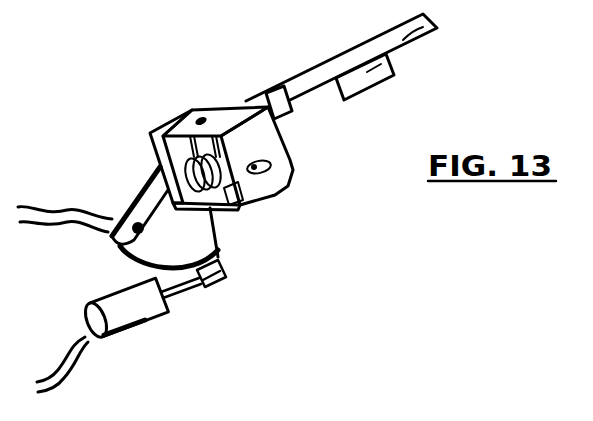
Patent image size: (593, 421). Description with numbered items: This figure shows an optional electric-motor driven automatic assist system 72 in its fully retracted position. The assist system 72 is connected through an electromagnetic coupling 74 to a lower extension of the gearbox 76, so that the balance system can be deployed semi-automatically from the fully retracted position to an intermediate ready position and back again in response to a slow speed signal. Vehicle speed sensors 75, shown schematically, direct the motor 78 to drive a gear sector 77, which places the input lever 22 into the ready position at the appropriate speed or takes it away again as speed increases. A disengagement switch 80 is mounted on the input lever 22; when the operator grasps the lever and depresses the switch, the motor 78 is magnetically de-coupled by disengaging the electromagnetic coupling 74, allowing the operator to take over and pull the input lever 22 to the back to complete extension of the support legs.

The input lever 22 is at (436, 28).
The disengagement switch 80 is at (392, 60).
The automatic assist system 72 is at (112, 192).
The gearbox 76 is at (152, 213).
The electromagnetic coupling 74 is at (120, 262).
The gear sector 77 is at (187, 251).
The motor 78 is at (173, 298).
The vehicle speed sensors 75 is at (148, 328).